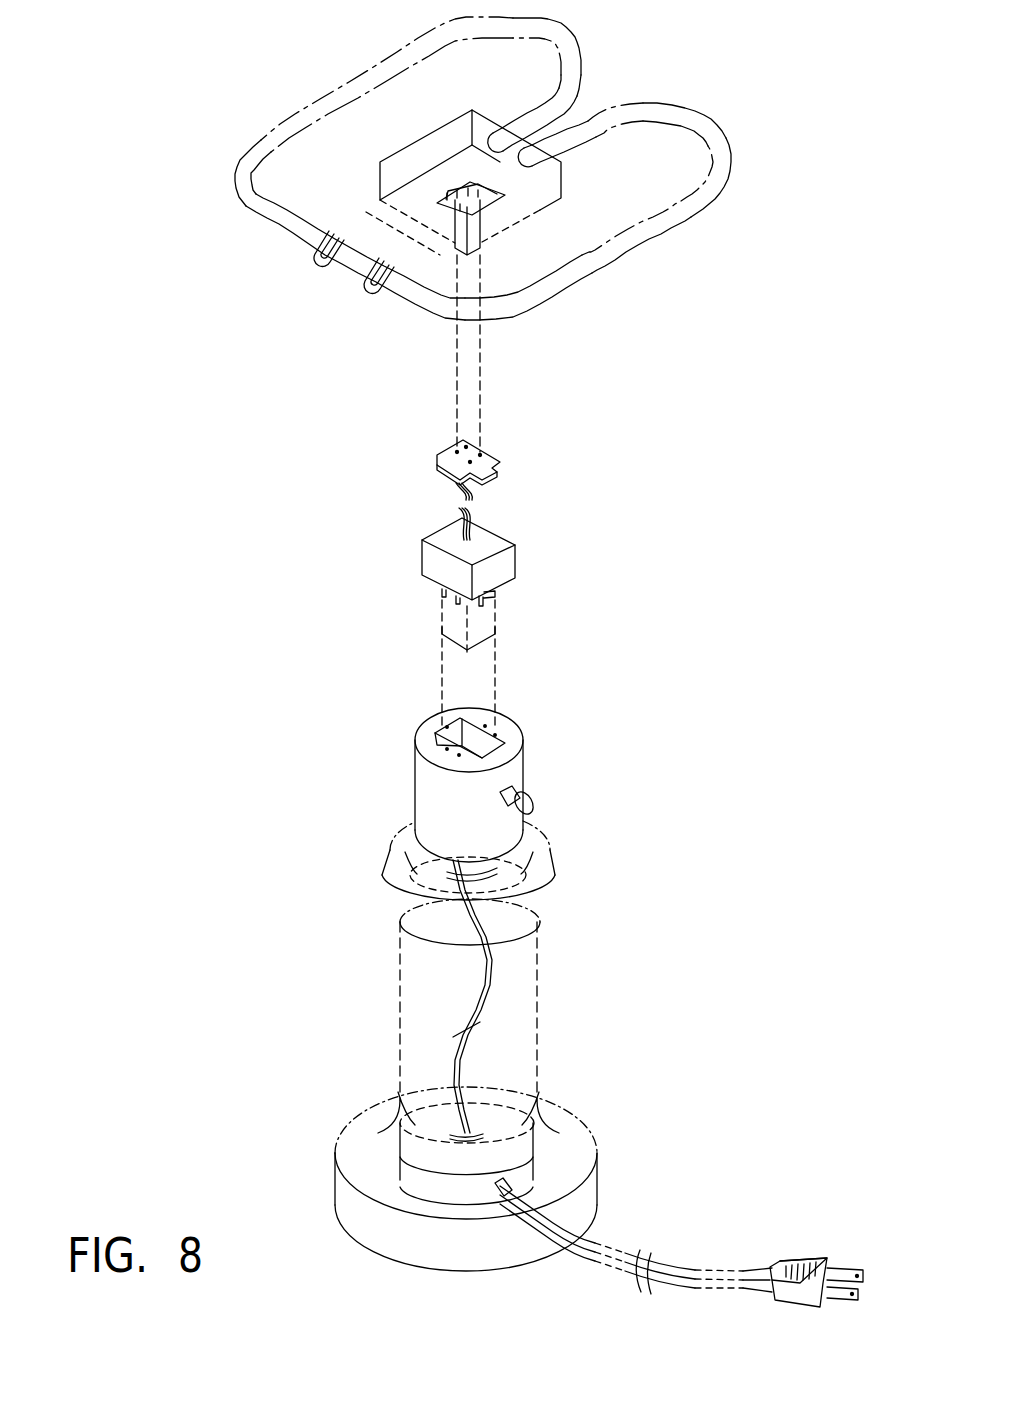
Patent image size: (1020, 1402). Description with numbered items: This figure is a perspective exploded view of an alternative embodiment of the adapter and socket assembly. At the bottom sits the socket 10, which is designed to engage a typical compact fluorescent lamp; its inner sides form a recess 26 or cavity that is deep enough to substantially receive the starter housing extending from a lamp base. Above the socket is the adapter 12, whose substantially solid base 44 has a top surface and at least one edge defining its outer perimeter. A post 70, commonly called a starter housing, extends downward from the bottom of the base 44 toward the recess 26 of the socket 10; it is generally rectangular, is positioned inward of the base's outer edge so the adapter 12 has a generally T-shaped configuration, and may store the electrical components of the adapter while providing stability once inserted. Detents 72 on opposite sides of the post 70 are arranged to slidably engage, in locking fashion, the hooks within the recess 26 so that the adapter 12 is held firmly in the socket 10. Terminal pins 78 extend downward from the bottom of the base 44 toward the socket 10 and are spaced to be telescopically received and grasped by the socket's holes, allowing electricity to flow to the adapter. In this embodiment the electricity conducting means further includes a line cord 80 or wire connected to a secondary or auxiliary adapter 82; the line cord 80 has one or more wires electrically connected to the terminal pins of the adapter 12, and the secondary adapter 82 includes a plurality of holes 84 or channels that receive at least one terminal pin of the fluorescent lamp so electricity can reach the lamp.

The socket 10 is at (495, 823).
The adapter 12 is at (537, 558).
The recess 26 is at (477, 727).
The base 44 is at (517, 546).
The post 70 is at (480, 633).
The detents 72 is at (484, 600).
The terminal pins 78 is at (442, 595).
The line cord 80 is at (480, 525).
The secondary adapter 82 is at (490, 455).
The holes 84 is at (444, 465).